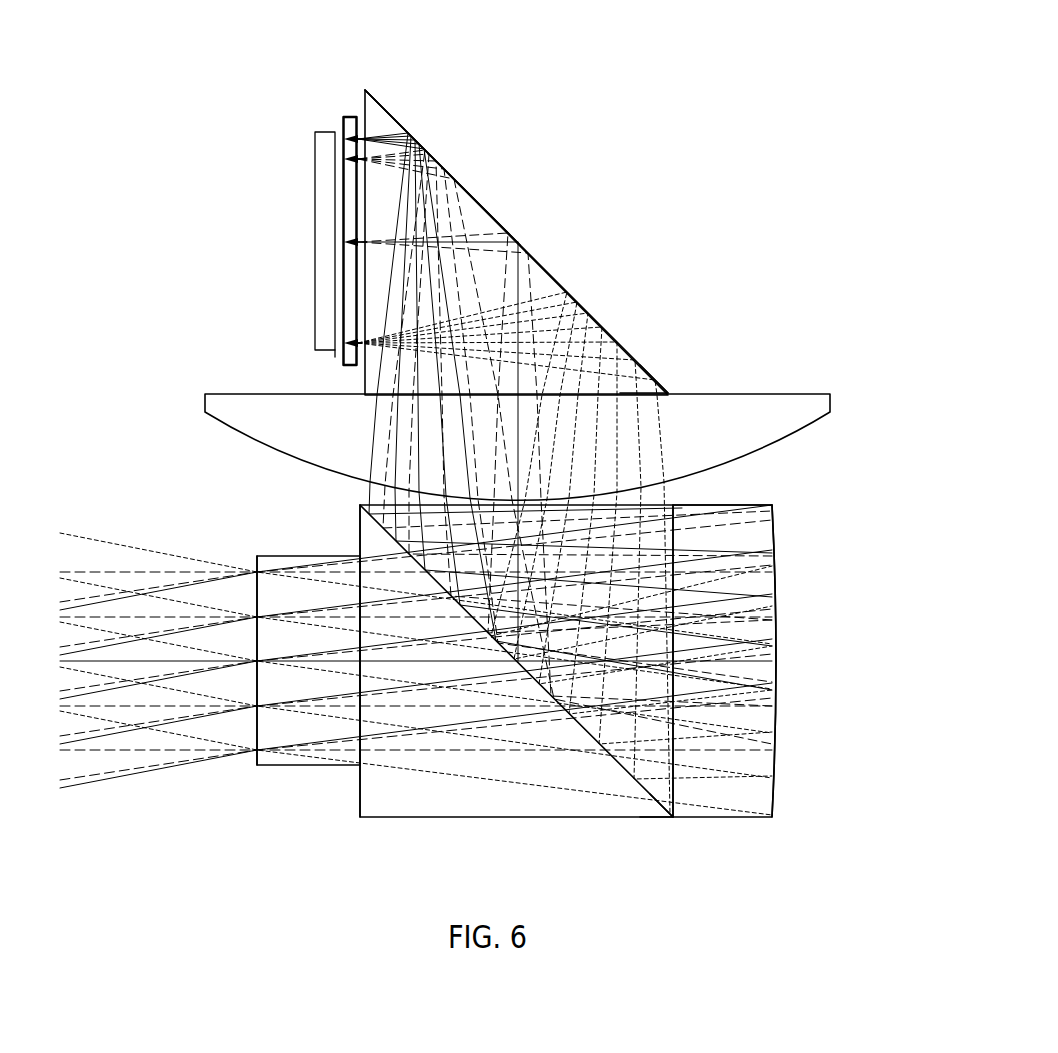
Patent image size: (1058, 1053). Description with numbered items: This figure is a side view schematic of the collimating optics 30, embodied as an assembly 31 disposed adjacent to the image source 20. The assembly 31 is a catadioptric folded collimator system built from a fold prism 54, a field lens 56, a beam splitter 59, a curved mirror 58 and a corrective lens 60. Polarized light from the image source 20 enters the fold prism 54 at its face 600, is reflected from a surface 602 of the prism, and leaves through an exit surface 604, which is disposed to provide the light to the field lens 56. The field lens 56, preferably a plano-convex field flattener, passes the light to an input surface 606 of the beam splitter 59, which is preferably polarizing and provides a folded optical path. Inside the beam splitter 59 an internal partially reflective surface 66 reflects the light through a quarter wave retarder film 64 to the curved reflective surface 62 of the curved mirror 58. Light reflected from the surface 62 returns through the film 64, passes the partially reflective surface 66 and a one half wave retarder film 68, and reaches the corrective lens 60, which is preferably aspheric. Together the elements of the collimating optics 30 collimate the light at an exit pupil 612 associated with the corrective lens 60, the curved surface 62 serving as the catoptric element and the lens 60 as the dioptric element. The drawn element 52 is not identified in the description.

The image source 20 is at (318, 186).
The cover glass 52 is at (348, 117).
The face 600 is at (366, 92).
The fold prism 54 is at (560, 274).
The surface 602 is at (513, 234).
The exit surface 604 is at (662, 398).
The assembly 31 is at (532, 94).
The collimating optics 30 is at (681, 107).
The field lens 56 is at (822, 393).
The input surface 606 is at (655, 505).
The beam splitter 59 is at (526, 820).
The internal partially reflective surface 66 is at (617, 772).
The retarder film 64 is at (676, 797).
The retarder film 68 is at (357, 797).
The curved reflective surface 62 is at (770, 540).
The curved mirror 58 is at (776, 757).
The corrective lens 60 is at (272, 768).
The exit pupil 612 is at (257, 585).